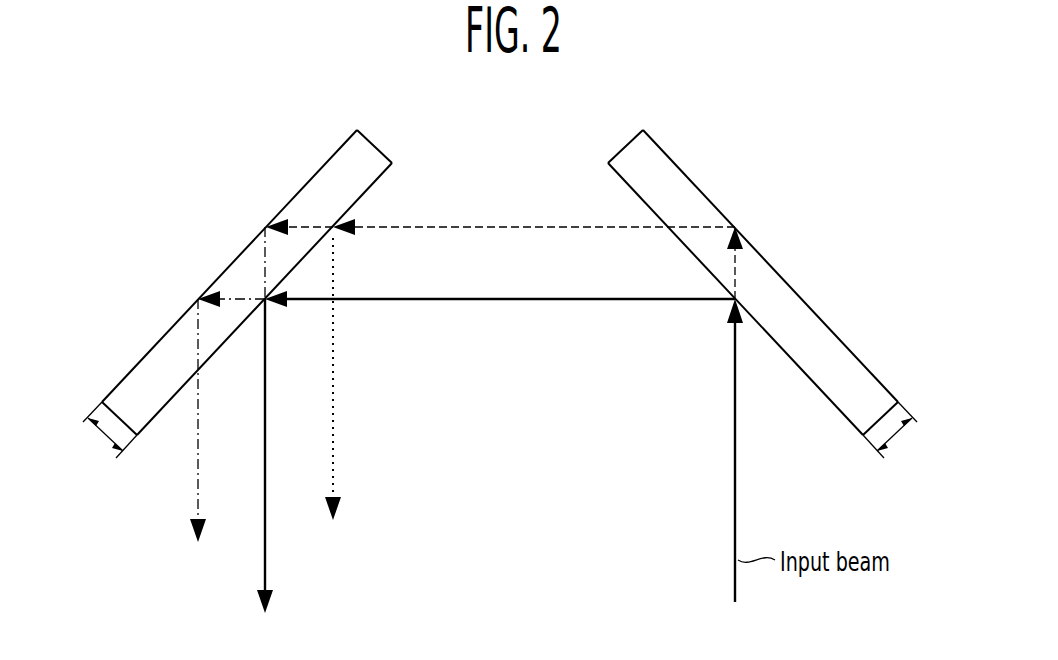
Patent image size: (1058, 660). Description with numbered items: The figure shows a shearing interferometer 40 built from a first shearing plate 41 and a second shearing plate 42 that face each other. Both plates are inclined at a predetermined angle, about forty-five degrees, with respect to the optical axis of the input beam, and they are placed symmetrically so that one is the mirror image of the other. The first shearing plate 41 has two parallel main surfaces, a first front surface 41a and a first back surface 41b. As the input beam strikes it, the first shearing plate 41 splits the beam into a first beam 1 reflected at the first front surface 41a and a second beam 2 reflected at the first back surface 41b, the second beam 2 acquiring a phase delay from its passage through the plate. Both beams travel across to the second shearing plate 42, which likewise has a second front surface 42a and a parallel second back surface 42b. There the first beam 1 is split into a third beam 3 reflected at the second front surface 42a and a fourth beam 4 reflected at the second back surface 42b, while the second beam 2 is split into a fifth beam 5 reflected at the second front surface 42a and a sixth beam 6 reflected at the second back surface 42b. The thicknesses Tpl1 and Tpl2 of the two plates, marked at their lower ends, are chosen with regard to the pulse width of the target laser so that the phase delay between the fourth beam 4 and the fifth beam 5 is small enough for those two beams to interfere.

The first beam 1 is at (583, 300).
The second beam 2 is at (558, 227).
The third beam 3 is at (266, 553).
The fourth beam 4 is at (197, 498).
The fifth beam 5 is at (335, 377).
The sixth beam 6 is at (265, 257).
The shearing interferometer 40 is at (499, 275).
The first shearing plate 41 is at (754, 275).
The first front surface 41a is at (627, 185).
The first back surface 41b is at (684, 172).
The second shearing plate 42 is at (244, 274).
The second front surface 42a is at (373, 185).
The second back surface 42b is at (313, 177).
The thickness of the first shearing plate Tpl1 is at (900, 435).
The thickness of the second shearing plate Tpl2 is at (99, 434).